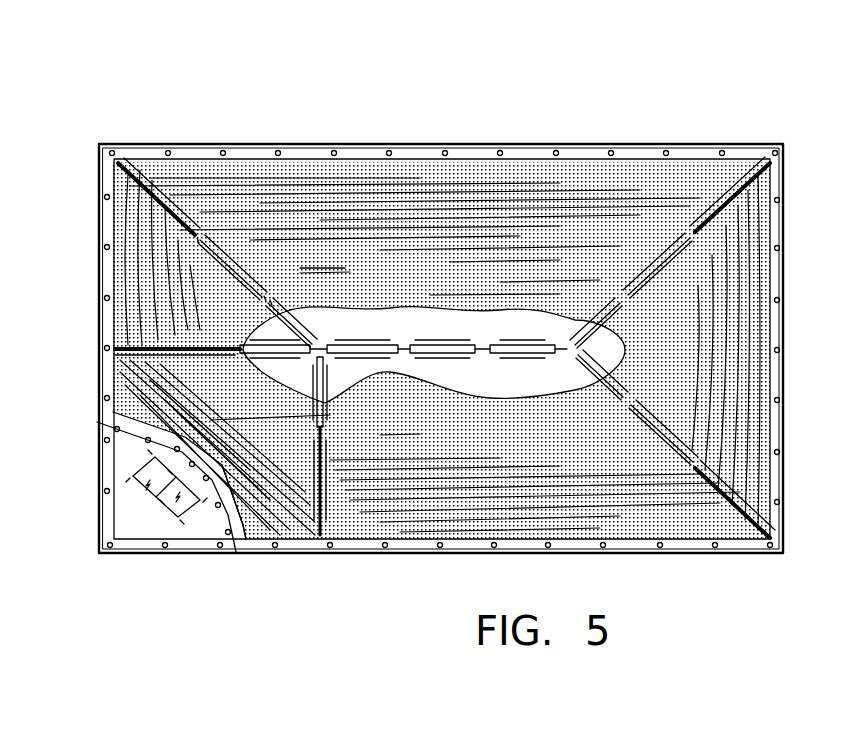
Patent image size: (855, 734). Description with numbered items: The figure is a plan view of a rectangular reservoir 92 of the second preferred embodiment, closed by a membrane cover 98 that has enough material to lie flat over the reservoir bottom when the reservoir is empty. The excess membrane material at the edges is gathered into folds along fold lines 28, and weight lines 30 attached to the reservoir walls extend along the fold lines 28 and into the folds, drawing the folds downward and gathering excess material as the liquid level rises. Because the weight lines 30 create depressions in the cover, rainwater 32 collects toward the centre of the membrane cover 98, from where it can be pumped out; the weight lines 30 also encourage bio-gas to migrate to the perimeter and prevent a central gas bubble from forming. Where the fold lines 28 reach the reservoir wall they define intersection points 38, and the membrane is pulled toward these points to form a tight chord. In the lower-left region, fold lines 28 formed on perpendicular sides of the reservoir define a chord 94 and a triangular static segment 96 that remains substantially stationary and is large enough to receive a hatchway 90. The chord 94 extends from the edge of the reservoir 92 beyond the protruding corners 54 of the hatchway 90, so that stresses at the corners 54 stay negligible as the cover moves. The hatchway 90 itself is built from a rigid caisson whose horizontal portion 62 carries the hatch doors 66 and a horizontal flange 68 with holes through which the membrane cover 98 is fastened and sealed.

The fold lines 28 is at (138, 170).
The weight lines 30 is at (212, 238).
The rainwater 32 is at (438, 328).
The intersection points 38 is at (113, 347).
The corners of the hatchway 54 is at (225, 478).
The horizontal portion 62 is at (137, 545).
The hatch doors 66 is at (150, 490).
The horizontal flange 68 is at (125, 432).
The hatchway 90 is at (148, 603).
The rectangular reservoir 92 is at (612, 106).
The chord 94 is at (252, 540).
The triangular static segment 96 is at (228, 543).
The membrane cover 98 is at (340, 266).